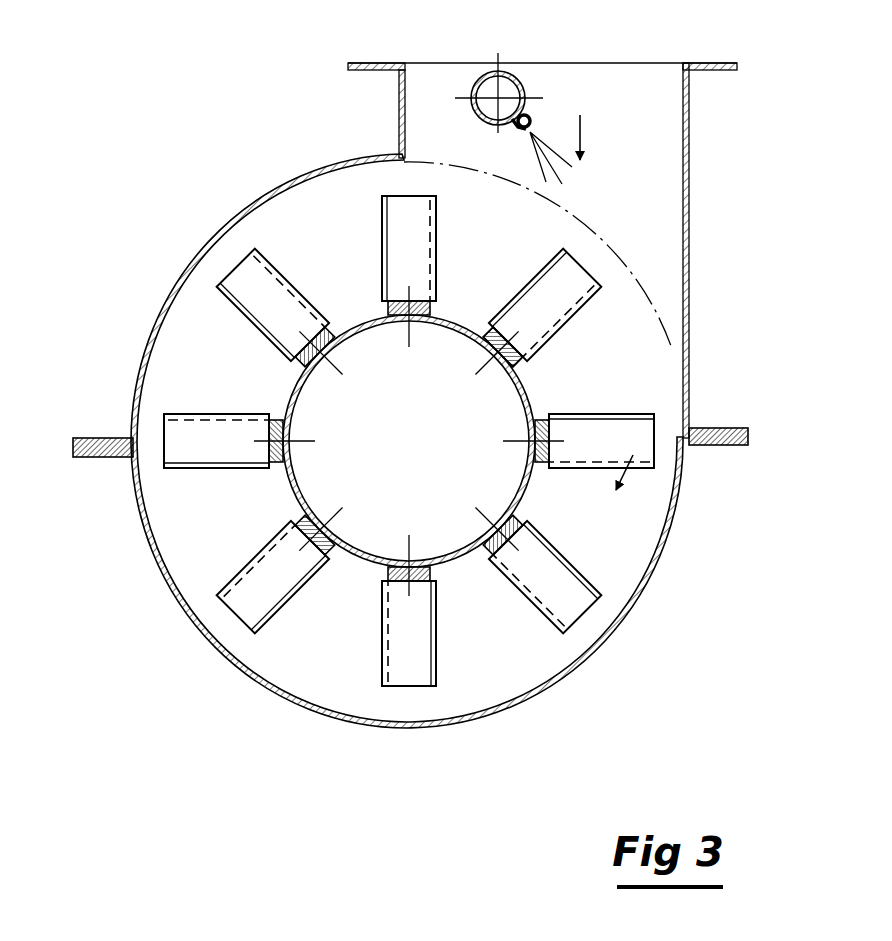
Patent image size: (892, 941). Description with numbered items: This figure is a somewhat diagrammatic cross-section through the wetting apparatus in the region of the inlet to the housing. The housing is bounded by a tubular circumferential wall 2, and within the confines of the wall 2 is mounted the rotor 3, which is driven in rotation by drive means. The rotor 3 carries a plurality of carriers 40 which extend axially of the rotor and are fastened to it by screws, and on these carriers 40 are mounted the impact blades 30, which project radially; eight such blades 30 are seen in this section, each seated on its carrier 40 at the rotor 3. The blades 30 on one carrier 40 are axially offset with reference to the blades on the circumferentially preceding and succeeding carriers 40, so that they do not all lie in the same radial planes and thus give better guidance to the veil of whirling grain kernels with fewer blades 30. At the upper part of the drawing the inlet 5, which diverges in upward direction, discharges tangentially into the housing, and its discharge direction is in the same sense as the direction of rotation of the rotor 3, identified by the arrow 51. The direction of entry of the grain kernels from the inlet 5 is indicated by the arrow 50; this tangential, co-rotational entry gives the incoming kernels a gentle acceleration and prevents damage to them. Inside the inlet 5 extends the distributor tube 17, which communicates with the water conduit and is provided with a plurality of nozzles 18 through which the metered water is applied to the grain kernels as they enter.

The tubular circumferential wall 2 is at (621, 632).
The rotor 3 is at (456, 562).
The inlet 5 is at (647, 197).
The distributor tube 17 is at (511, 74).
The nozzles 18 is at (531, 128).
The impact blades 30 is at (555, 295).
The carriers 40 is at (528, 357).
The arrow indicating direction of entry of grain kernels 50 is at (565, 137).
The direction of rotation of the rotor 51 is at (640, 478).